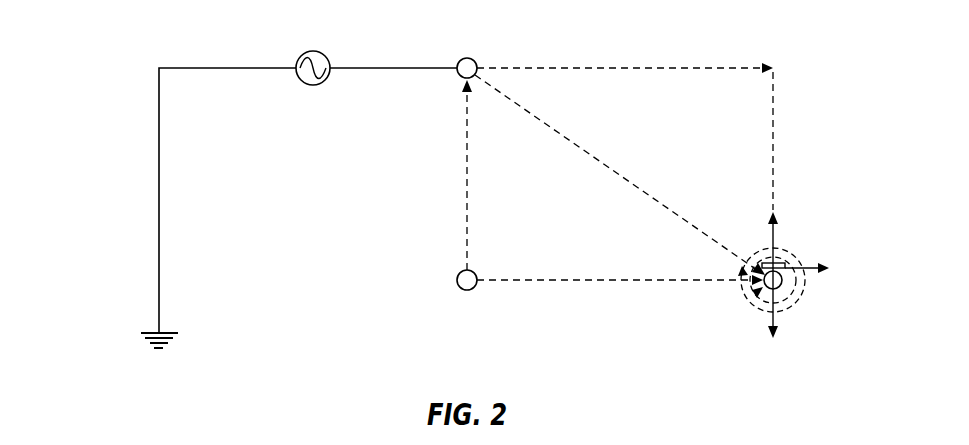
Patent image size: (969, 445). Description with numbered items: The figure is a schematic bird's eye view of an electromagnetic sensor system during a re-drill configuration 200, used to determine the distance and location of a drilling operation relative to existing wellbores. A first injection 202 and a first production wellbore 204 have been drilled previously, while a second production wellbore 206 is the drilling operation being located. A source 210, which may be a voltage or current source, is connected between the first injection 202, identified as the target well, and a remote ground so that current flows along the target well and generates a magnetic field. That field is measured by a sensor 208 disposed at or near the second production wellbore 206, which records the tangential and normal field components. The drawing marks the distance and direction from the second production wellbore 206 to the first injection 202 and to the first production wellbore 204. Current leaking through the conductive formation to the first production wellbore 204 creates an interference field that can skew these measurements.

The re-drill configuration 200 is at (138, 50).
The source 210 is at (313, 51).
The first injection 202 is at (467, 58).
The first production wellbore 204 is at (469, 290).
The second production wellbore 206 is at (780, 292).
The sensor 208 is at (772, 262).